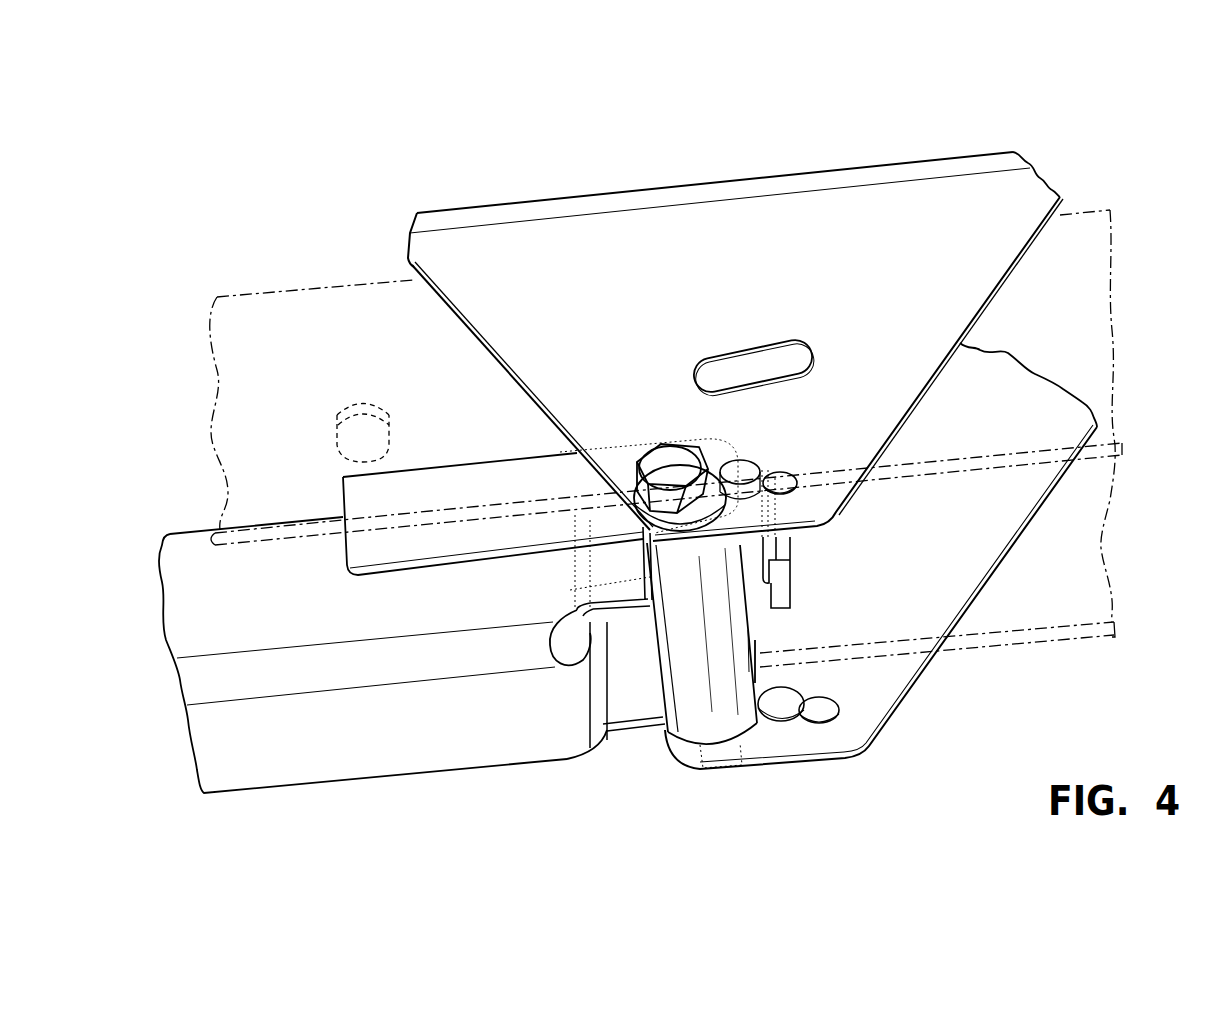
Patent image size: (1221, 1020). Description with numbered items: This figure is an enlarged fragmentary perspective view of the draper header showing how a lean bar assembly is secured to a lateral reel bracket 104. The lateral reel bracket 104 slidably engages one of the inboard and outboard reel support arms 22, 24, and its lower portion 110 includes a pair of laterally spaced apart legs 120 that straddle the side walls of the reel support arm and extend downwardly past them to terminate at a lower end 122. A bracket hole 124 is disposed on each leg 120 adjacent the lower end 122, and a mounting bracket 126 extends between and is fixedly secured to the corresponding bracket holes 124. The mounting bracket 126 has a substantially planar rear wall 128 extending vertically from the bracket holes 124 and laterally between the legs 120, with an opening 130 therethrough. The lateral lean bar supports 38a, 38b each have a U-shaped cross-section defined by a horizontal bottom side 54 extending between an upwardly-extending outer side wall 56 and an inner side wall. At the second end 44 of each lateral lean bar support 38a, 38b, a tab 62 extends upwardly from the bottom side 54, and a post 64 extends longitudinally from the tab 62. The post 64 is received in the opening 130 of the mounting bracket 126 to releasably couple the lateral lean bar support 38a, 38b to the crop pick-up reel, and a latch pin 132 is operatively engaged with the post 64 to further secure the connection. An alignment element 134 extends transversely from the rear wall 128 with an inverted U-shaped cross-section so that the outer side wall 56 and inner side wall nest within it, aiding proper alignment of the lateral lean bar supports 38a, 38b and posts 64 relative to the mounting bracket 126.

The inboard reel support arm 22 is at (241, 286).
The outboard reel support arm 24 is at (328, 322).
The lateral lean bar support 38a is at (318, 817).
The lateral lean bar support 38b is at (363, 717).
The second end 44 is at (533, 737).
The horizontal bottom side 54 is at (438, 724).
The outer side wall 56 is at (352, 357).
The tab 62 is at (600, 663).
The post 64 is at (613, 575).
The lateral reel bracket 104 is at (1037, 128).
The lower portion 110 is at (1061, 309).
The leg 120 is at (724, 285).
The lower end 122 is at (823, 502).
The bracket hole 124 is at (785, 492).
The mounting bracket 126 is at (752, 739).
The rear wall 128 is at (770, 686).
The opening 130 is at (762, 604).
The latch pin 132 is at (793, 586).
The alignment element 134 is at (499, 489).